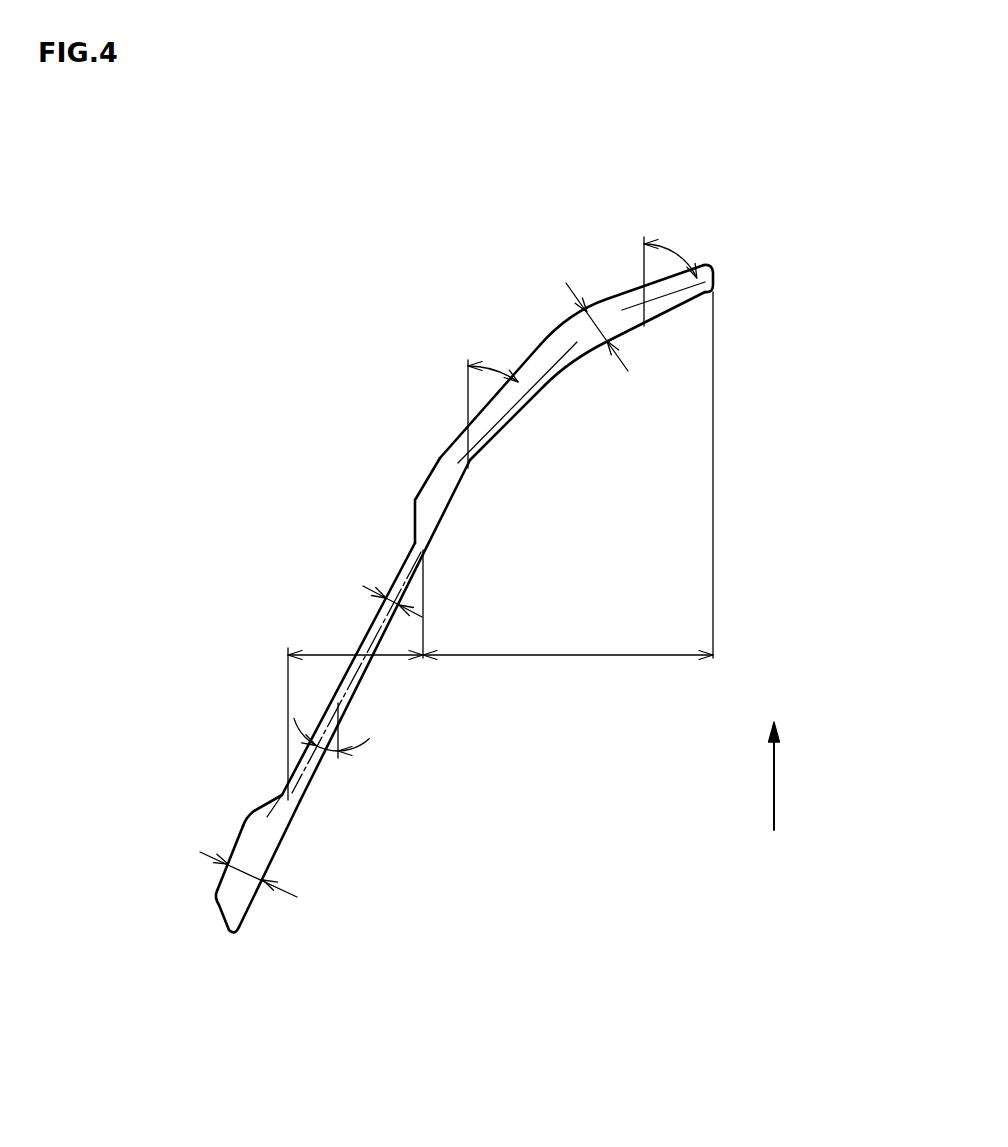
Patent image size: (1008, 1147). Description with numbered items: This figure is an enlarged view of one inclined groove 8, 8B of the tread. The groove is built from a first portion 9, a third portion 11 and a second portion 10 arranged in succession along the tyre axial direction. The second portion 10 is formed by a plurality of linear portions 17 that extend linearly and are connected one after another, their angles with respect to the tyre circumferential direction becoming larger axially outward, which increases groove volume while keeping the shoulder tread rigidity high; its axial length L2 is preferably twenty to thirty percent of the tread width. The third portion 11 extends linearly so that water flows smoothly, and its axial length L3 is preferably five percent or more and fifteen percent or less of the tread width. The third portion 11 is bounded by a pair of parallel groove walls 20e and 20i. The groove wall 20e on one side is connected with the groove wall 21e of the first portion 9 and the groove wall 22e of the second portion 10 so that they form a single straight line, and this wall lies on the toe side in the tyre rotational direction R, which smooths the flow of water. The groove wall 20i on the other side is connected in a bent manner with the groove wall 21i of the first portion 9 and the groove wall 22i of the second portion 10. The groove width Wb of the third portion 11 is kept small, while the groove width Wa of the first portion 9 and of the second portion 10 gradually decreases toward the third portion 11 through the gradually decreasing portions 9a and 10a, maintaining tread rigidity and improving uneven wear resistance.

The inclined groove 8 is at (445, 539).
The frame member (second) 8B is at (672, 215).
The first portion 9 is at (245, 888).
The gradually decreasing portion 9a is at (267, 817).
The second portion 10 is at (577, 342).
The gradually decreasing portion 10a is at (428, 525).
The third portion 11 is at (353, 680).
The linear portion 17 is at (482, 447).
The groove wall on the other side of the third portion 20i is at (370, 618).
The groove wall on one side of the third portion 20e is at (405, 598).
The groove wall on the other side of the first portion 21i is at (228, 853).
The groove wall on one side of the first portion 21e is at (277, 853).
The groove wall on the other side of the second portion 22i is at (557, 333).
The groove wall on one side of the second portion 22e is at (686, 306).
The groove width Wa is at (596, 314).
The groove width of the third portion Wb is at (393, 590).
The length of the second portion L2 is at (568, 494).
The length of the third portion L3 is at (330, 653).
The tyre rotational direction R is at (774, 795).